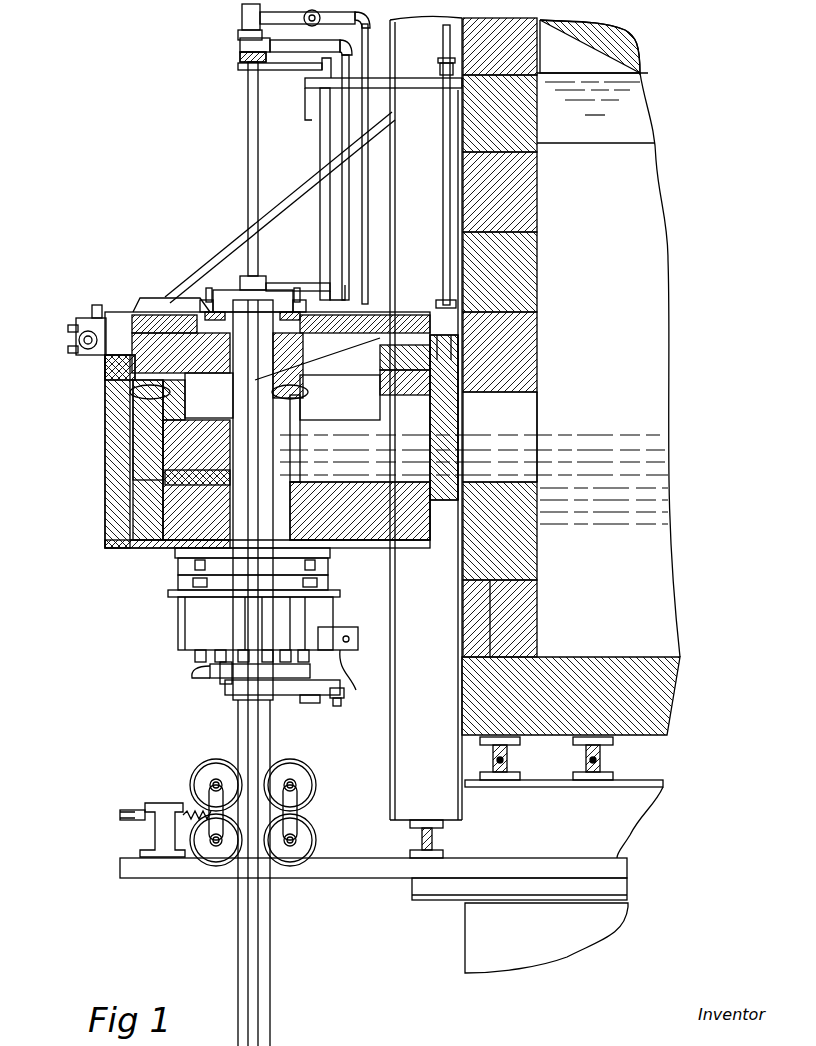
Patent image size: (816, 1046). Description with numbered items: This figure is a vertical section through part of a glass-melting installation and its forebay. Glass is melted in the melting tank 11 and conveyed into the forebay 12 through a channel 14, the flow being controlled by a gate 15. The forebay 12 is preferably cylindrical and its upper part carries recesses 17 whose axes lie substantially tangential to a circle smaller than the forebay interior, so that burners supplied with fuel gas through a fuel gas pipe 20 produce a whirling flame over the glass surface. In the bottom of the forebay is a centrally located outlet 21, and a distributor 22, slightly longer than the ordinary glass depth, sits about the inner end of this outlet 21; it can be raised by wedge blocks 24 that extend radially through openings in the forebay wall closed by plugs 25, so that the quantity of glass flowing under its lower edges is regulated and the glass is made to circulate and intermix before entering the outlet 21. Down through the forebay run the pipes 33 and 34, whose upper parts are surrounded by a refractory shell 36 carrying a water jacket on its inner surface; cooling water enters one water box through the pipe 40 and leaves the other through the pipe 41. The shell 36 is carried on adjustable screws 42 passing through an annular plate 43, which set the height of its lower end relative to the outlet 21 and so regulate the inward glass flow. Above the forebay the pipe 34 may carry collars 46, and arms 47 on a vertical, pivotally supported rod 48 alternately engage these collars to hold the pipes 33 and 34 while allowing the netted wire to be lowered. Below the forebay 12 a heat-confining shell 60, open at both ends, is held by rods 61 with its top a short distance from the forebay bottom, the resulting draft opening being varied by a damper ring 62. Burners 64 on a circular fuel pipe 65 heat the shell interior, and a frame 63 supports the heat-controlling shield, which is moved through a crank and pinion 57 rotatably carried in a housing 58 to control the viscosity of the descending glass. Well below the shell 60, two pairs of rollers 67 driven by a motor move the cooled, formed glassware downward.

The melting tank 11 is at (645, 362).
The forebay 12 is at (118, 488).
The channel 14 is at (518, 418).
The gate 15 is at (445, 428).
The recesses 17 is at (135, 392).
The fuel gas pipe 20 is at (70, 344).
The outlet 21 is at (178, 552).
The distributor 22 is at (210, 415).
The wedge blocks 24 is at (145, 455).
The plugs 25 is at (118, 415).
The pipe 33 is at (240, 27).
The pipe 34 is at (247, 105).
The refractory shell 36 is at (332, 351).
The pipe 40 is at (225, 302).
The pipe 41 is at (295, 288).
The adjustable screws 42 is at (205, 300).
The annular plate 43 is at (365, 300).
The collars 46 is at (240, 57).
The arms 47 is at (285, 72).
The rod 48 is at (320, 132).
The crank and pinion 57 is at (353, 678).
The housing 58 is at (356, 634).
The shell 60 is at (196, 616).
The rods 61 is at (328, 584).
The damper ring 62 is at (328, 567).
The frame 63 is at (296, 695).
The burners 64 is at (194, 656).
The circular fuel pipe 65 is at (210, 672).
The rollers 67 is at (286, 772).